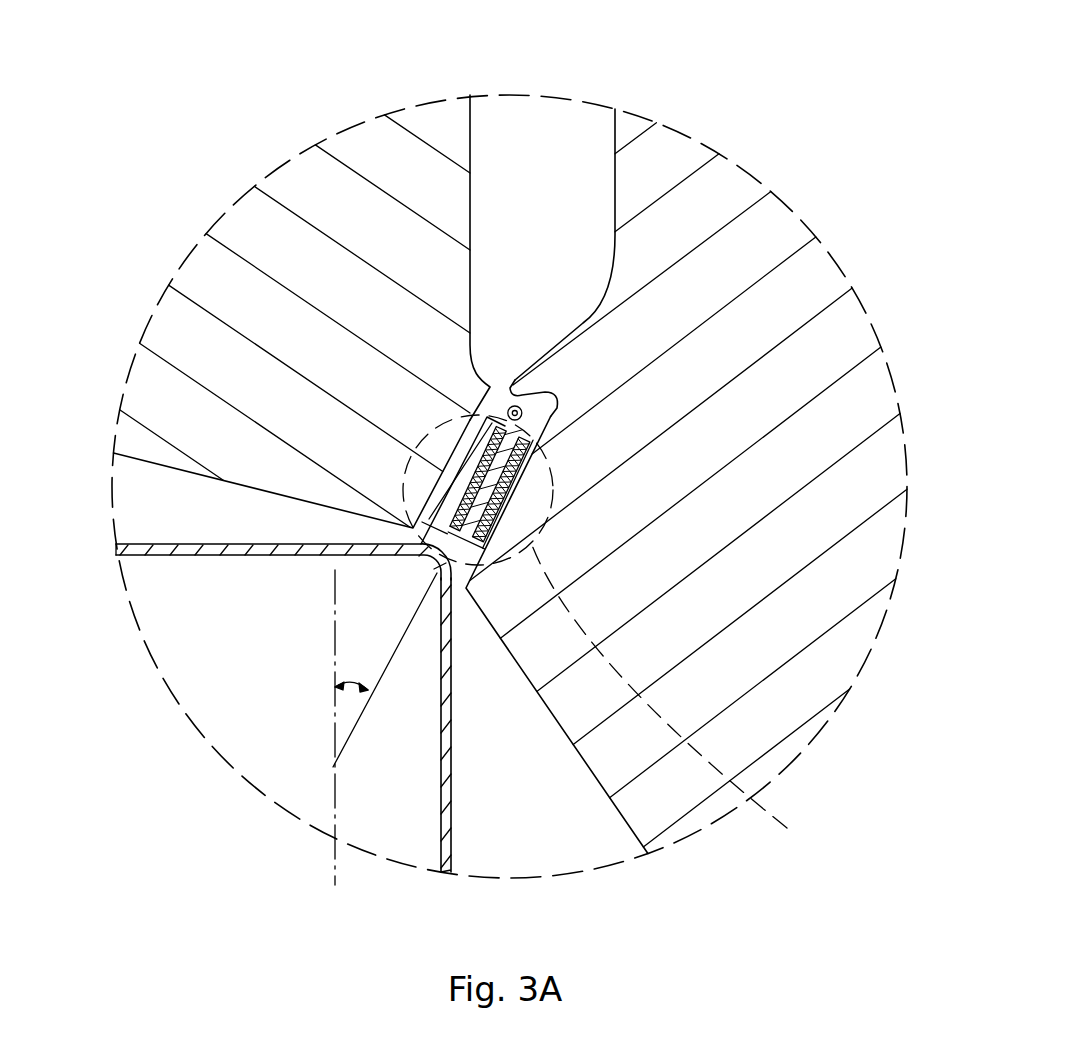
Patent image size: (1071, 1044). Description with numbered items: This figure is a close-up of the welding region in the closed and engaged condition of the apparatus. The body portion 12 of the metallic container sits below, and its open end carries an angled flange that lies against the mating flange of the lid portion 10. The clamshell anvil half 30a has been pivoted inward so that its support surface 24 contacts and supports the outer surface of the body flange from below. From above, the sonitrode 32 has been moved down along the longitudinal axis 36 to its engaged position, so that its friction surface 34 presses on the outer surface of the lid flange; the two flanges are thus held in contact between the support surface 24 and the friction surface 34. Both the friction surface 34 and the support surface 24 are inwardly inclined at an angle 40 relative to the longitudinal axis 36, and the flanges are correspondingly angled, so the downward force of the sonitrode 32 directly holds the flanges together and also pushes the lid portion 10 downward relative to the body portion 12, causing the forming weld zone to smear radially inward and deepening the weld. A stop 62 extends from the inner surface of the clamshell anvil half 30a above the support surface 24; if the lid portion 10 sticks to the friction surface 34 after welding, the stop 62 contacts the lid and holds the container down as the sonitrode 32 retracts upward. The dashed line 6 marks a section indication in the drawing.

The section line 6 is at (676, 704).
The lid portion 10 is at (263, 545).
The body portion 12 is at (447, 828).
The support surface 24 is at (527, 468).
The clamshell anvil half 30a is at (647, 173).
The sonitrode 32 is at (423, 178).
The friction surface 34 is at (455, 417).
The longitudinal axis 36 is at (335, 802).
The angle 40 is at (337, 697).
The stop 62 is at (518, 388).